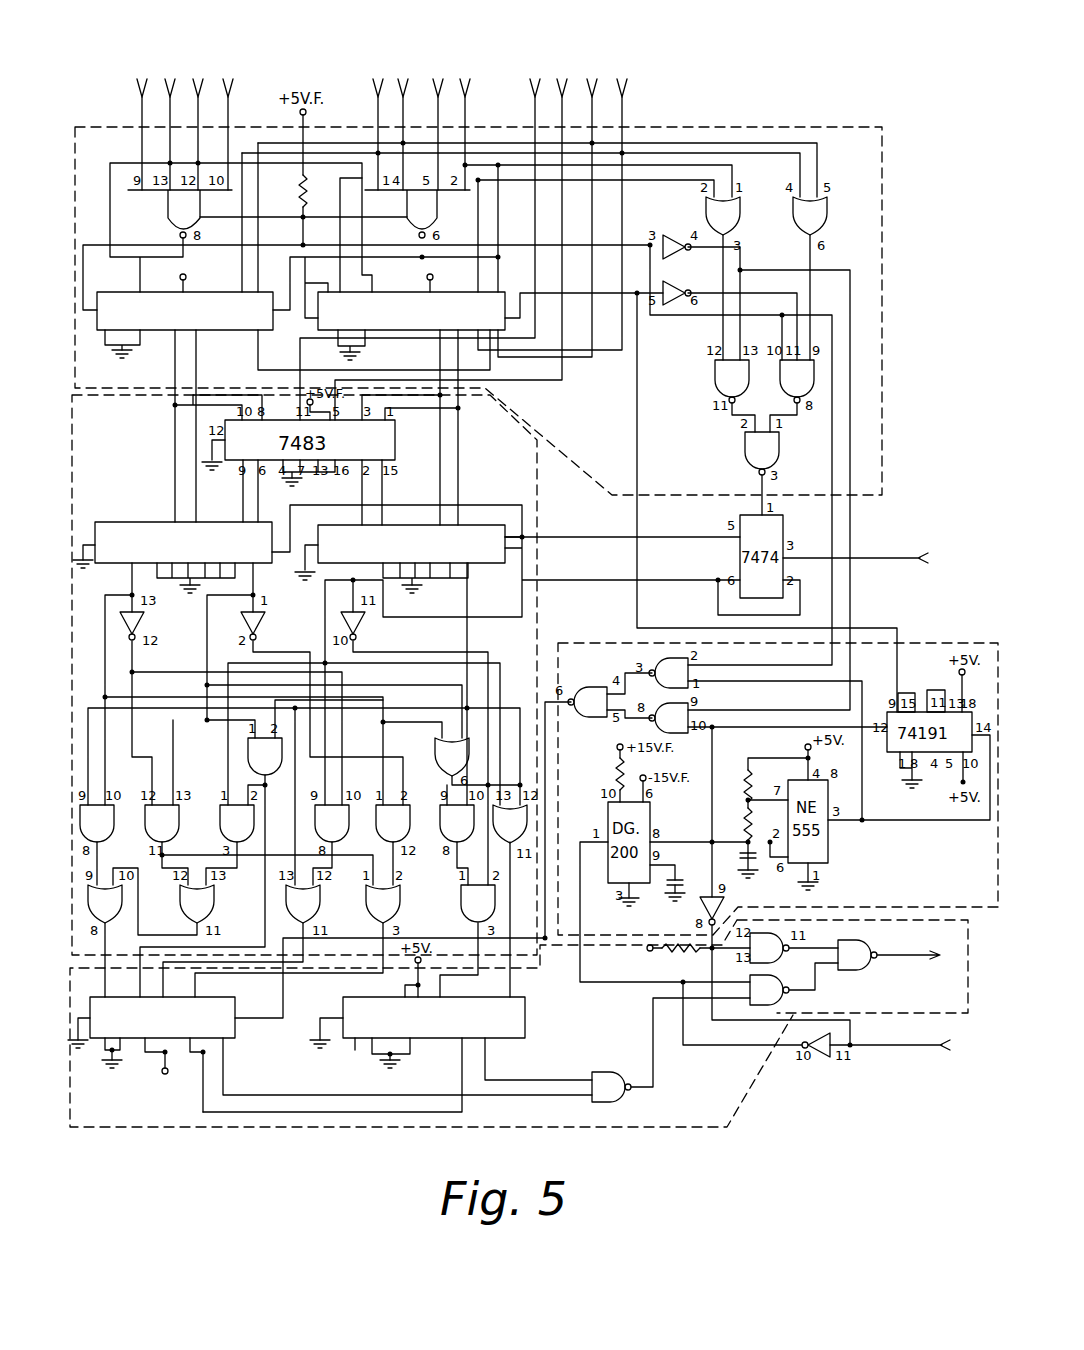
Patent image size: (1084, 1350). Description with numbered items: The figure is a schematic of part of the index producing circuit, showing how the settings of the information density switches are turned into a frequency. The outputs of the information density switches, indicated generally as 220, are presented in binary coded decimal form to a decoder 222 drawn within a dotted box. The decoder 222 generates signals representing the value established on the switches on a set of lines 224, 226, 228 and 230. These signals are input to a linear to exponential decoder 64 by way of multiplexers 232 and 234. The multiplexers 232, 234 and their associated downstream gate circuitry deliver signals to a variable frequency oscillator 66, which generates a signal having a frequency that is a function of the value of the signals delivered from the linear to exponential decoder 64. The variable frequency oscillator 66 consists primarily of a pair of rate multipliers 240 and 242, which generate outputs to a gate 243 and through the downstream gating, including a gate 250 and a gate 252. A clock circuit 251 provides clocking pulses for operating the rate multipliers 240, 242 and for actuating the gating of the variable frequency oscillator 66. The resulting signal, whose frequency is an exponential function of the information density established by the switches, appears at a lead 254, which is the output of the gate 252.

The outputs of the information density switches 220 is at (437, 72).
The decoder 222 is at (880, 228).
The line 224 is at (168, 360).
The line 226 is at (193, 372).
The line 228 is at (440, 350).
The line 230 is at (470, 365).
The multiplexer 232 is at (128, 520).
The multiplexer 234 is at (484, 520).
The linear to exponential decoder 64 is at (540, 528).
The rate multiplier 240 is at (237, 1025).
The rate multiplier 242 is at (497, 1048).
The gate 243 is at (605, 1072).
The gate 250 is at (787, 998).
The clock circuit 251 is at (985, 922).
The gate 252 is at (875, 963).
The lead 254 is at (905, 958).
The variable frequency oscillator 66 is at (757, 1075).